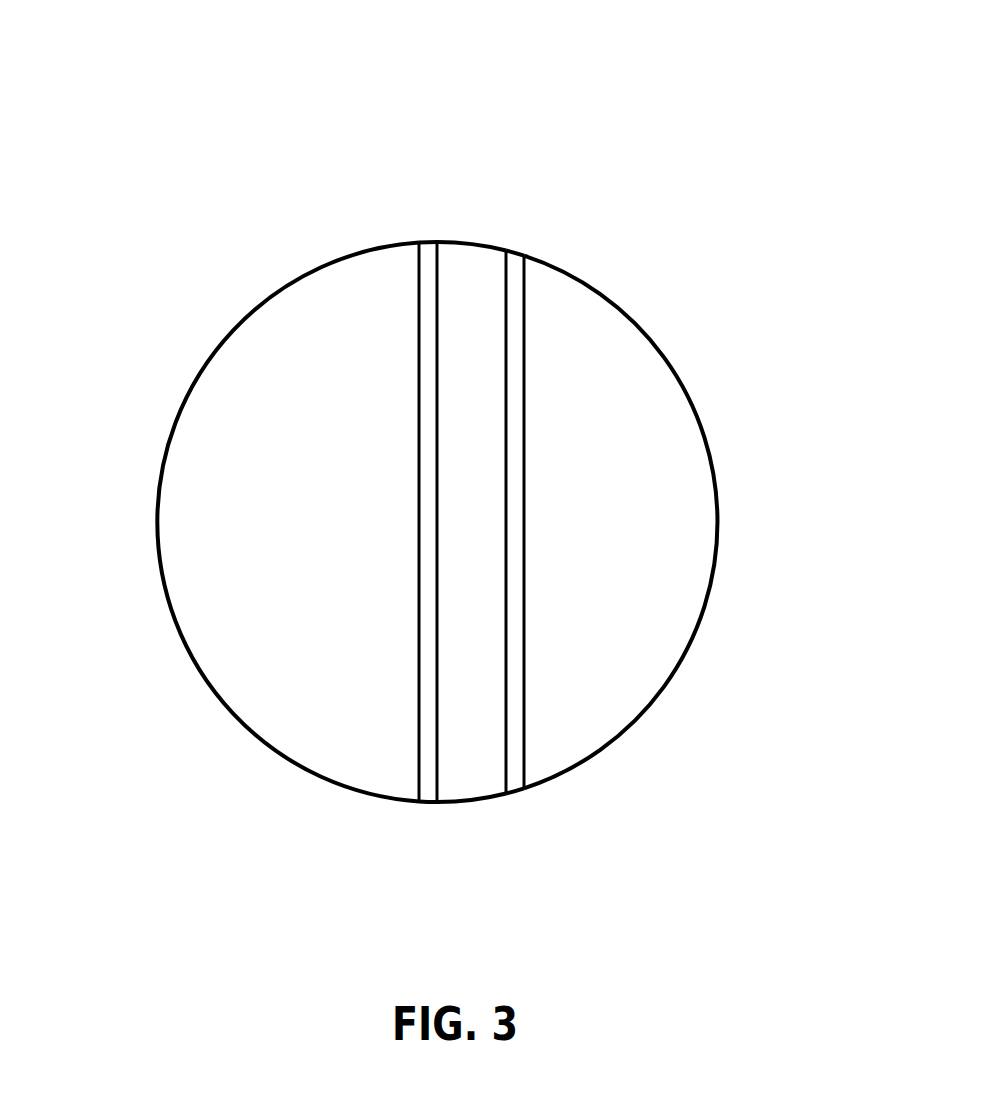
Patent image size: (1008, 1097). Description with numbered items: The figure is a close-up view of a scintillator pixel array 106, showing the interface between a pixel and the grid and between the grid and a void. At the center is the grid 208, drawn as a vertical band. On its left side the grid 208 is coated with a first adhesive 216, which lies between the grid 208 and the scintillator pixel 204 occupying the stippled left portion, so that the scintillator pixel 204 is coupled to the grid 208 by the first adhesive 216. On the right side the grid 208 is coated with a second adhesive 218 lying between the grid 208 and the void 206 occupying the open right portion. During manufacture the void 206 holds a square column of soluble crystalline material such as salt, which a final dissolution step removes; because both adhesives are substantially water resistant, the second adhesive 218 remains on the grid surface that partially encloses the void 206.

The scintillator pixel array 106 is at (366, 90).
The scintillator pixel 204 is at (215, 657).
The void 206 is at (678, 560).
The grid 208 is at (473, 783).
The first adhesive 216 is at (430, 255).
The second adhesive 218 is at (517, 274).